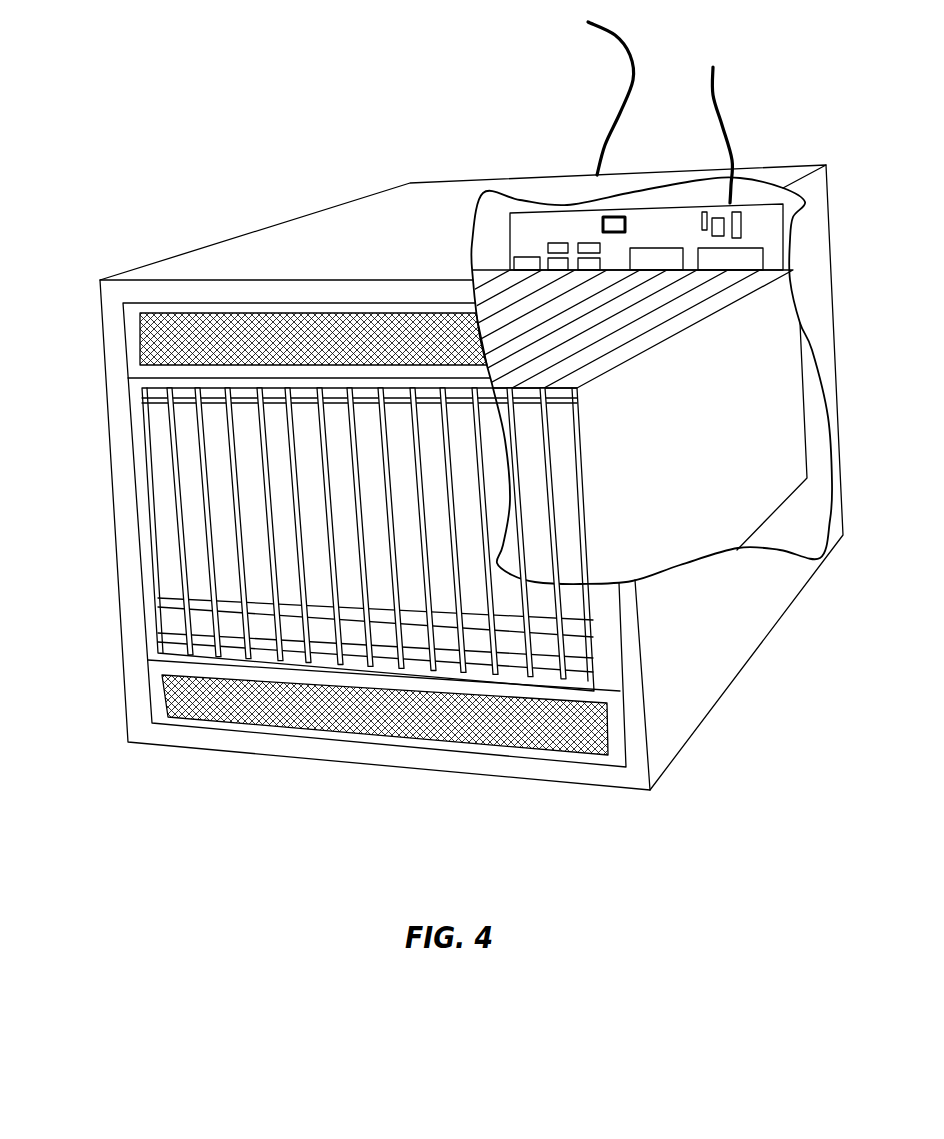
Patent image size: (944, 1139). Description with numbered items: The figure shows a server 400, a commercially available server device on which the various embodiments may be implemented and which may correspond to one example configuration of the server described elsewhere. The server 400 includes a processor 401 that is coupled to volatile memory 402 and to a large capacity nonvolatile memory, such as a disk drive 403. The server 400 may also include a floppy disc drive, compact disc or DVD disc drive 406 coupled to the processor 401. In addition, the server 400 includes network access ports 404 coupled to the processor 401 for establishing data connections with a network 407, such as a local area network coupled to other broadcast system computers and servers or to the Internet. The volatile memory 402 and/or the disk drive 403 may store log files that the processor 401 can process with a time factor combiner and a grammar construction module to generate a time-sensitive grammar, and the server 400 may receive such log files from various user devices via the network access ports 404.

The server 400 is at (471, 404).
The processor 401 is at (652, 257).
The volatile memory 402 is at (752, 262).
The disk drive 403 is at (223, 475).
The network access ports 404 is at (527, 260).
The disc drive 406 is at (193, 527).
The network 407 is at (628, 45).